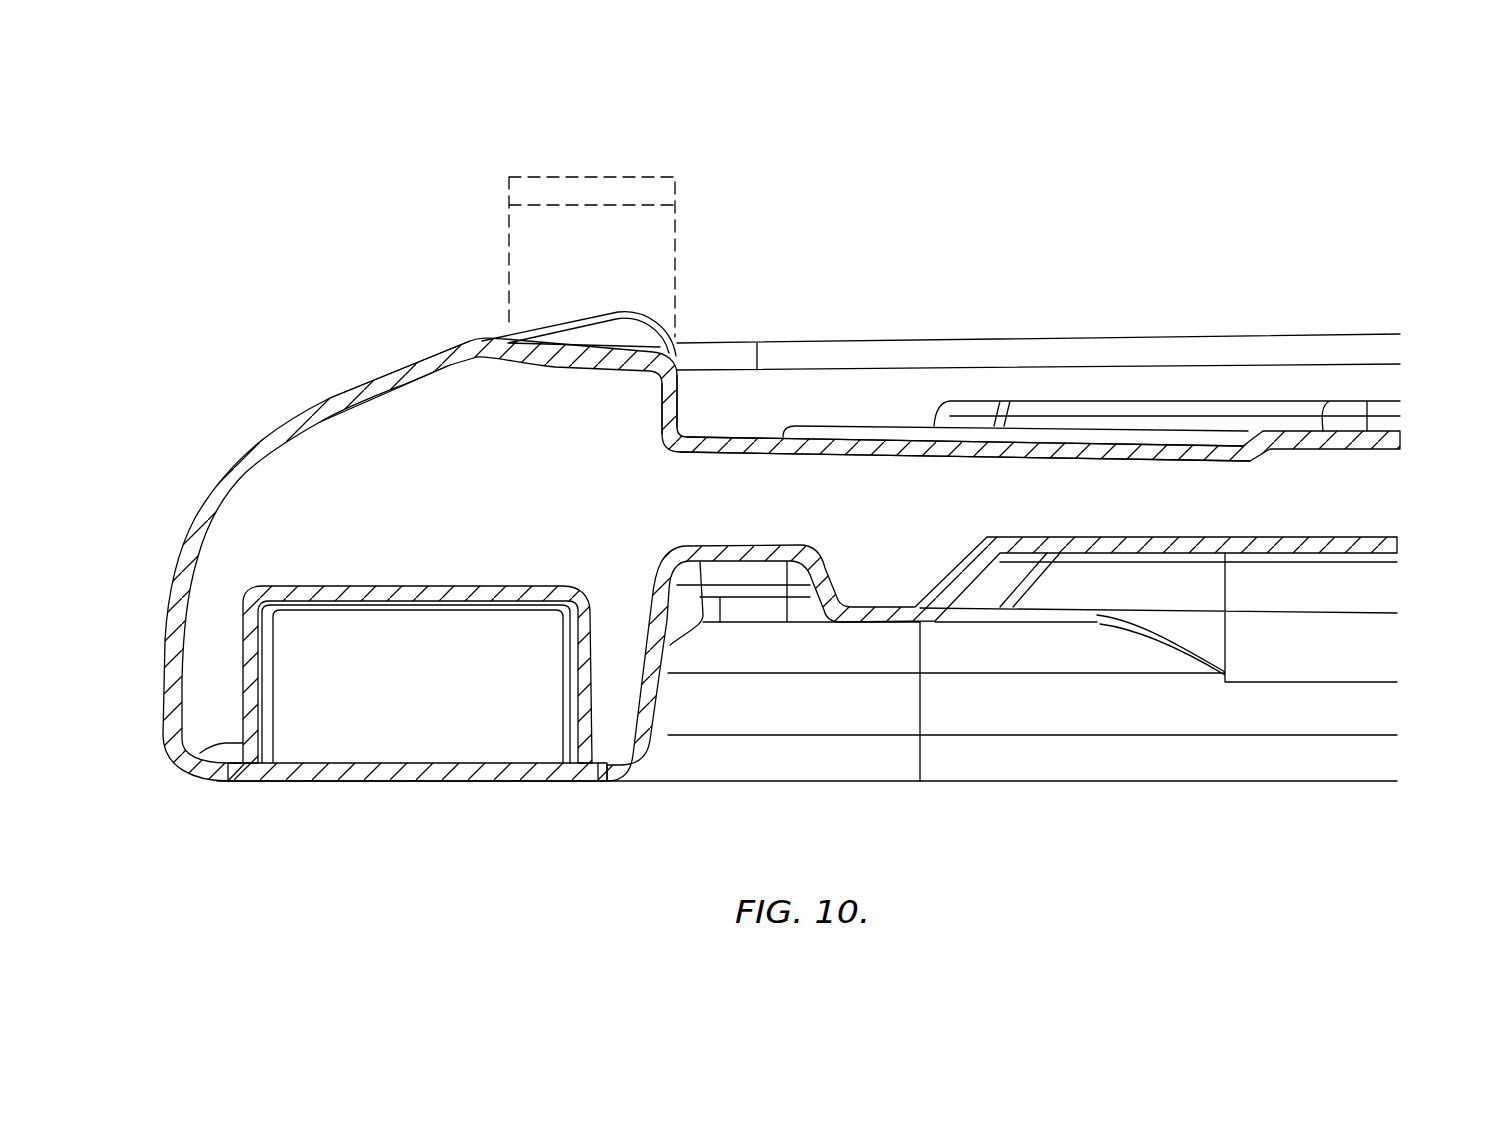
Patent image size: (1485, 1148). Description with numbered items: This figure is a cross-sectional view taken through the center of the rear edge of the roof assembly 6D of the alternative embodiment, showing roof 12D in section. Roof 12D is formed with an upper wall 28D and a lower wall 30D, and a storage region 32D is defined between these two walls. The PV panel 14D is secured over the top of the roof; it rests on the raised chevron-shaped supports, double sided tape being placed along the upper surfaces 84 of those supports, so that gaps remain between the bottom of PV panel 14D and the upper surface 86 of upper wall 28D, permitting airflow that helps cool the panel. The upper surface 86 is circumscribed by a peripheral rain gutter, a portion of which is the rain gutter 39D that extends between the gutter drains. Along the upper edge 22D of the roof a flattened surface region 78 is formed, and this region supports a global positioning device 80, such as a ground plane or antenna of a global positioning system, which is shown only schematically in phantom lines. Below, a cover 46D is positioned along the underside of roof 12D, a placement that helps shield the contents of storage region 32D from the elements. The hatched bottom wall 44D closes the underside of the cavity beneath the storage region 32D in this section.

The roof assembly 6D is at (1197, 266).
The roof 12D is at (309, 398).
The PV panel 14D is at (965, 342).
The upper edge 22D is at (438, 352).
The upper wall 28D is at (1397, 441).
The lower wall 30D is at (1397, 546).
The storage region 32D is at (430, 700).
The rain gutter 39D is at (722, 437).
The bottom plate 44D is at (512, 743).
The cover 46D is at (320, 783).
The flattened surface region 78 is at (608, 348).
The global positioning device 80 is at (643, 190).
The upper surfaces of chevron-shaped supports 84 is at (1250, 401).
The upper surface of upper wall 86 is at (857, 425).